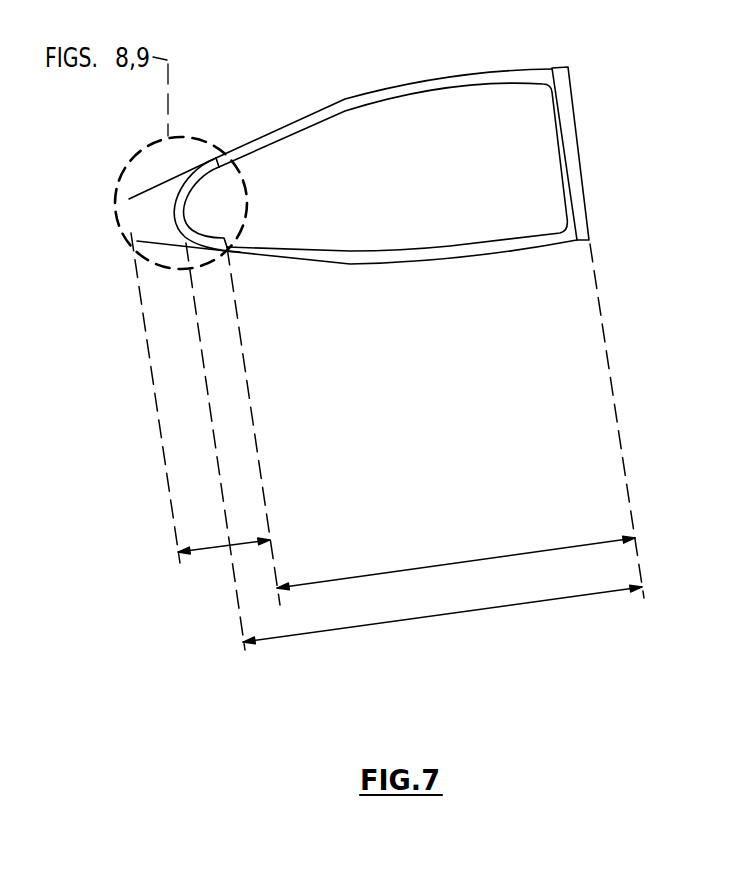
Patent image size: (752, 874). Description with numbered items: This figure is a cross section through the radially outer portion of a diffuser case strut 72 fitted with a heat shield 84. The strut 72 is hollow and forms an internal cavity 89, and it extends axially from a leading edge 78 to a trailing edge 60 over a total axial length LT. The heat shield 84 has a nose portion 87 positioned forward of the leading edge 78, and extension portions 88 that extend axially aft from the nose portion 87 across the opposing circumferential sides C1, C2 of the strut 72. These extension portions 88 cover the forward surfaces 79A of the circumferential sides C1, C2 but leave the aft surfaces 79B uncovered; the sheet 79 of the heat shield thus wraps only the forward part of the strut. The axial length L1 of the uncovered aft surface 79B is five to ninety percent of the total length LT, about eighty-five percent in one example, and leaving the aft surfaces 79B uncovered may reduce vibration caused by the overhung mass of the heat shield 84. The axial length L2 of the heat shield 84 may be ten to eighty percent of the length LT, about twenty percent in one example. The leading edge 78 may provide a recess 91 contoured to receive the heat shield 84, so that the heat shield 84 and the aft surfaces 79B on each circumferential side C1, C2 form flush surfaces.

The trailing edge 60 is at (572, 184).
The strut 72 is at (367, 97).
The leading edge 78 is at (178, 193).
The sheet 79 is at (433, 80).
The forward surfaces 79A is at (200, 180).
The aft surfaces 79B is at (477, 83).
The heat shield 84 is at (143, 202).
The nose portion 87 is at (158, 212).
The extension portions 88 is at (203, 157).
The internal cavity 89 is at (449, 182).
The recess 91 is at (214, 155).
The first circumferential side C1 is at (280, 124).
The second circumferential side C2 is at (263, 259).
The axial length of uncovered aft surface L1 is at (462, 562).
The axial length of heat shield L2 is at (215, 550).
The total axial length LT is at (453, 614).